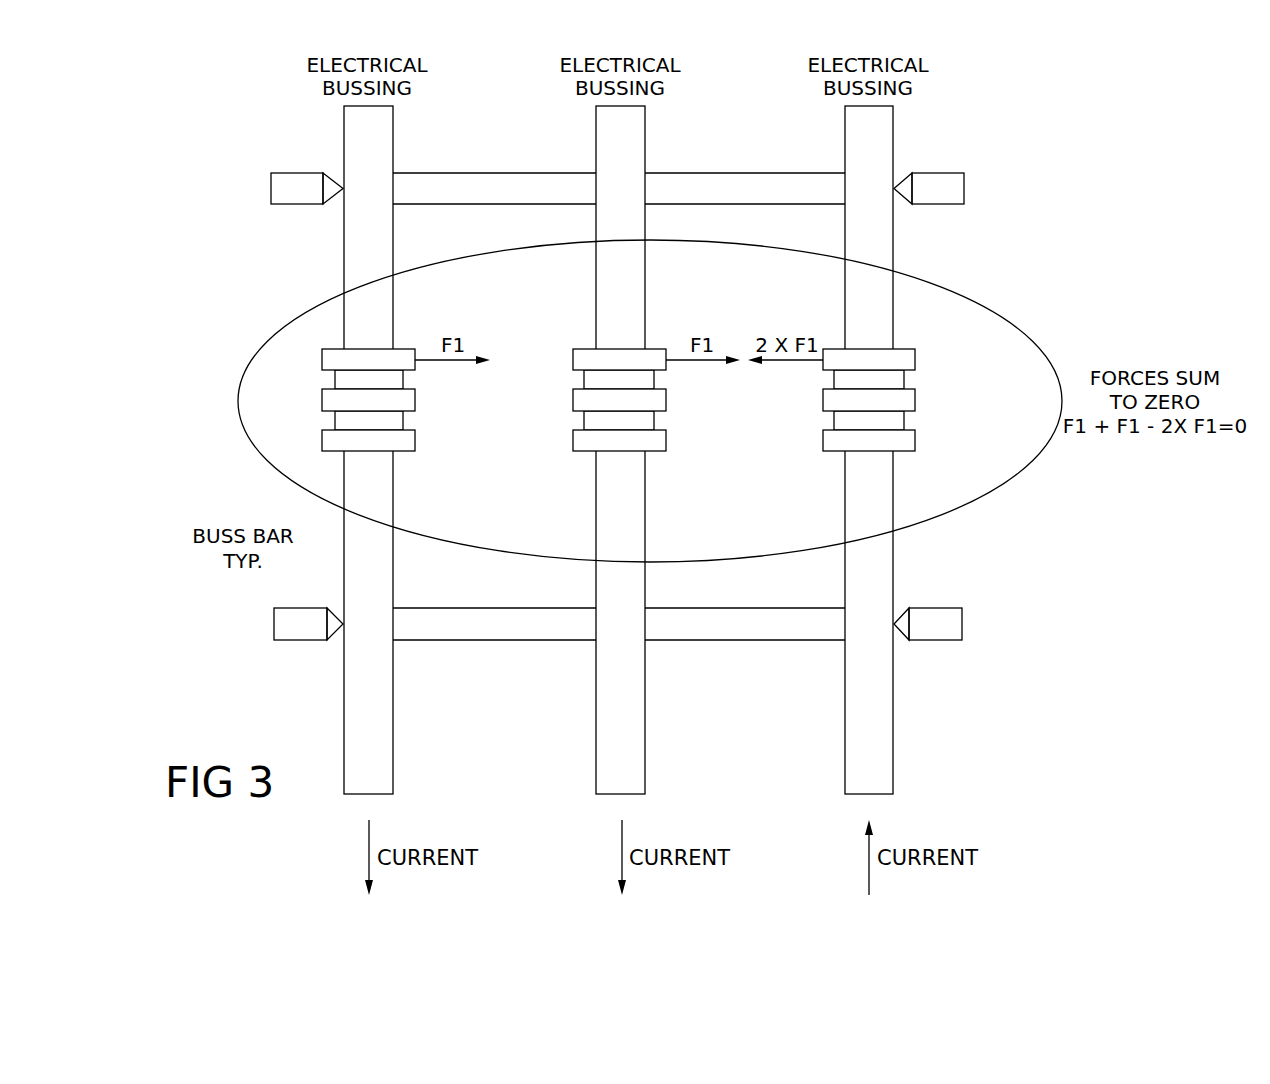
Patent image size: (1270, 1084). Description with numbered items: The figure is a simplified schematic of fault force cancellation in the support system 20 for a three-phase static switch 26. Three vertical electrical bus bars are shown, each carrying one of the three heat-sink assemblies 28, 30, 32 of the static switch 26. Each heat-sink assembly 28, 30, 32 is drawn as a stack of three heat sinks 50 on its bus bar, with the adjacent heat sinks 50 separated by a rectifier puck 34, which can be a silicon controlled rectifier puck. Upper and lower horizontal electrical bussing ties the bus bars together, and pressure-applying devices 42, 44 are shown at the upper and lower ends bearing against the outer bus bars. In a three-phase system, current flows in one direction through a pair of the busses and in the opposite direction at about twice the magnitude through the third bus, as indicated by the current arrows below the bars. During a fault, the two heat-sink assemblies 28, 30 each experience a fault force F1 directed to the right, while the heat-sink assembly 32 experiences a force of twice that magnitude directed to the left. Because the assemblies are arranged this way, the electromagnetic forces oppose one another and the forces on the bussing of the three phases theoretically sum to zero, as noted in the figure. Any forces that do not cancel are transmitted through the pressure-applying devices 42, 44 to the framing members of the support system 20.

The support system 20 is at (1039, 188).
The three-phase static switch 26 is at (1094, 228).
The heat-sink assembly 28 is at (468, 325).
The heat-sink assembly 30 is at (671, 326).
The heat-sink assembly 32 is at (901, 340).
The rectifier puck 34 is at (395, 379).
The pressure-applying device 42 is at (292, 180).
The pressure-applying device 44 is at (300, 633).
The heat sink 50 is at (408, 356).